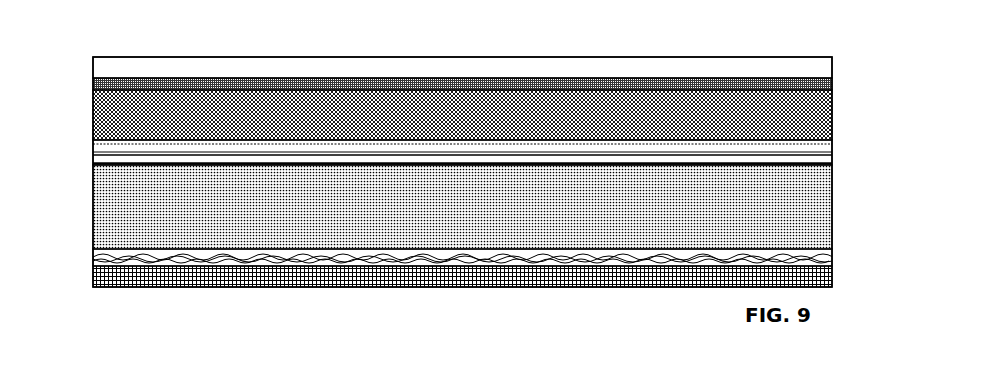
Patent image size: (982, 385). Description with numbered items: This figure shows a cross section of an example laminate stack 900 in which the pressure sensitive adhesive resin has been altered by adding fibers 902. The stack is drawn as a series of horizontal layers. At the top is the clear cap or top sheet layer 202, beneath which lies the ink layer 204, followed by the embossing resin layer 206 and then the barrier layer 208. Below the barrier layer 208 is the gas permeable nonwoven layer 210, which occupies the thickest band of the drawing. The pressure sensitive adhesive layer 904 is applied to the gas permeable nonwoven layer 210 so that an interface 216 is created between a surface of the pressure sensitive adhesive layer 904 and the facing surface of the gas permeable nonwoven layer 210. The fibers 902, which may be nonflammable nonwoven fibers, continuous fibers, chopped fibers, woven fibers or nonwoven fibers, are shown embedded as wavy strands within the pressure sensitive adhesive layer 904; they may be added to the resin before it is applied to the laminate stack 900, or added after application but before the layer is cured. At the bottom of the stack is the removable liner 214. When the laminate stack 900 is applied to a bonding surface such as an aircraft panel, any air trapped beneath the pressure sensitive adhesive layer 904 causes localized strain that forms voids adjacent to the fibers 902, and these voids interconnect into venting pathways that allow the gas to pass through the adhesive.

The laminate stack 900 is at (183, 27).
The top sheet layer 202 is at (832, 71).
The ink layer 204 is at (832, 80).
The embossing resin layer 206 is at (832, 118).
The barrier layer 208 is at (832, 155).
The gas permeable nonwoven layer 210 is at (832, 222).
The interface 216 is at (128, 243).
The pressure sensitive adhesive layer 904 is at (832, 258).
The fibers 902 is at (93, 259).
The removable liner 214 is at (832, 269).